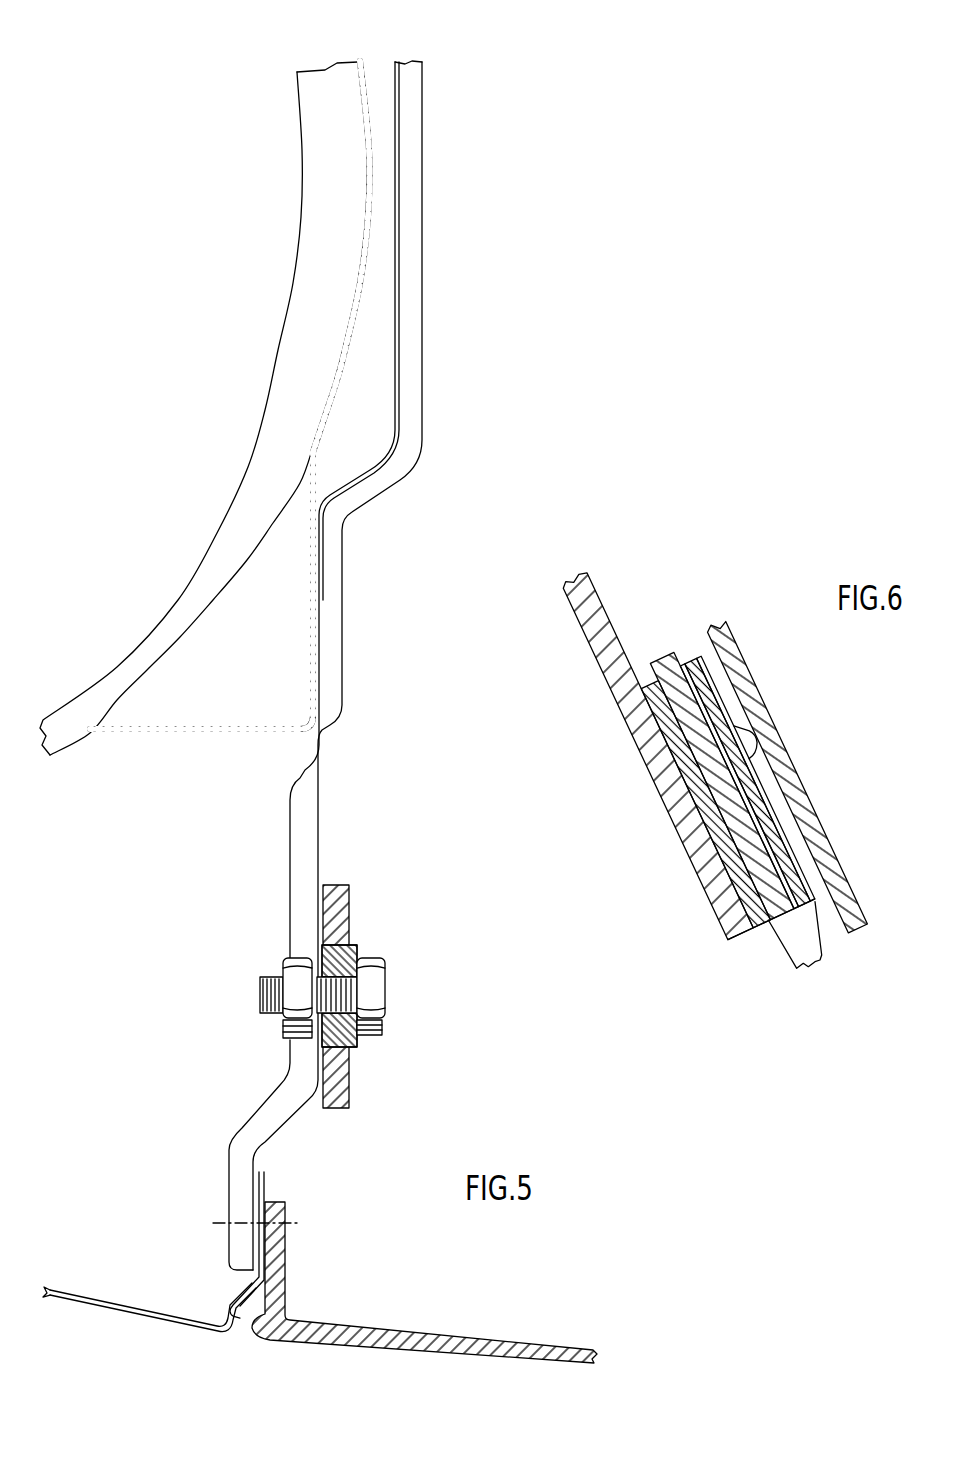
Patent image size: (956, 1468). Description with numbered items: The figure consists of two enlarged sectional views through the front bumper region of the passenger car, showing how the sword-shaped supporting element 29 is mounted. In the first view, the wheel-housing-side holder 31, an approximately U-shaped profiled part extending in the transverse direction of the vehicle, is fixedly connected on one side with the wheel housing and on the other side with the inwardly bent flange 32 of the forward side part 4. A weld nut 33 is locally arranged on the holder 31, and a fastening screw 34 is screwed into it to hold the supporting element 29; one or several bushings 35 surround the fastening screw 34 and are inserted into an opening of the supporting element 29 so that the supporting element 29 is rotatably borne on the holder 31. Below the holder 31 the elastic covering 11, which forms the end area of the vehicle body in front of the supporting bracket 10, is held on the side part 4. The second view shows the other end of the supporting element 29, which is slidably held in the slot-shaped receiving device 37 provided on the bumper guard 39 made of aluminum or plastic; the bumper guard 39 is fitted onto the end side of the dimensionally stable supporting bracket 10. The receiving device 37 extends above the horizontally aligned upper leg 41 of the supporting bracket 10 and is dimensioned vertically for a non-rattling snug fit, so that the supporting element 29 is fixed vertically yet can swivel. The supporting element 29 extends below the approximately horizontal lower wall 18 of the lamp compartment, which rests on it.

In FIG. 5, the forward side part 4 is at (125, 1320).
In FIG. 6, the supporting bracket 10 is at (685, 880).
In FIG. 5, the elastic covering 11 is at (423, 1343).
In FIG. 6, the lower wall 18 is at (733, 668).
In FIG. 5, the supporting element 29 is at (345, 893).
In FIG. 6, the supporting element 29 is at (793, 940).
In FIG. 5, the wheel-housing-side holder 31 is at (370, 478).
In FIG. 5, the inwardly bent flange 32 is at (263, 1180).
In FIG. 5, the weld nut 33 is at (285, 1030).
In FIG. 5, the fastening screw 34 is at (377, 990).
In FIG. 5, the bushing 35 is at (353, 1048).
In FIG. 6, the receiving device 37 is at (683, 660).
In FIG. 6, the bumper guard 39 is at (818, 915).
In FIG. 6, the upper leg 41 is at (681, 820).